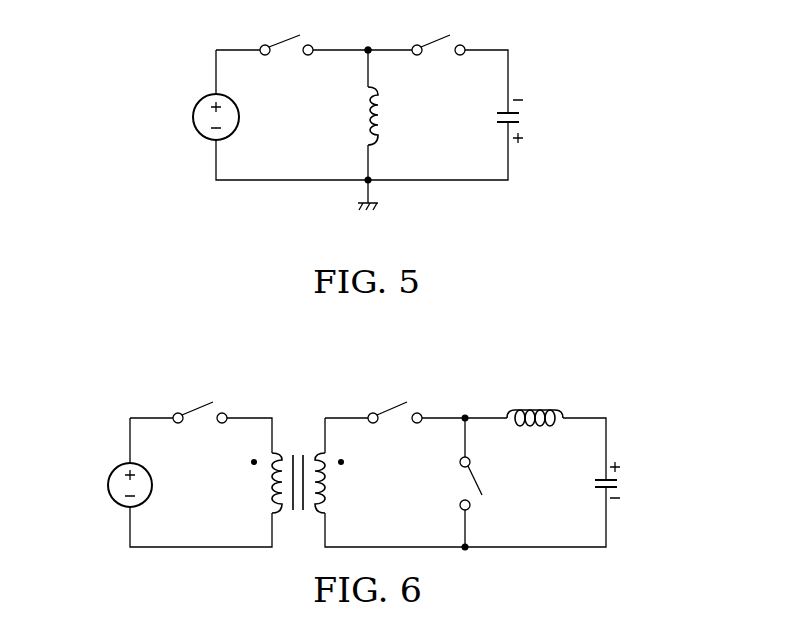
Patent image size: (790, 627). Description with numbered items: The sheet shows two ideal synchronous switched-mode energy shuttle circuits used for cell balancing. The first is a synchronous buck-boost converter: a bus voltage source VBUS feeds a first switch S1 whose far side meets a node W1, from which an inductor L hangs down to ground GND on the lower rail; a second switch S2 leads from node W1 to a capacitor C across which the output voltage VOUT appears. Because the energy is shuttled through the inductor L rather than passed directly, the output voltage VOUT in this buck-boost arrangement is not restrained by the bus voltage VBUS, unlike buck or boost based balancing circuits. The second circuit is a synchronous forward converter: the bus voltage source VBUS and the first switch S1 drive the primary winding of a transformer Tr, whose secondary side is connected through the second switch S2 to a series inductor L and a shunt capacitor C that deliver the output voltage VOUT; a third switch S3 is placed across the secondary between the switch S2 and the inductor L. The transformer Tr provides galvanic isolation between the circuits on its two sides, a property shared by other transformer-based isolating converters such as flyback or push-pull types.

In FIG. 5, the bus voltage VBUS is at (184, 117).
In FIG. 6, the bus voltage VBUS is at (97, 485).
In FIG. 5, the switch S1 is at (286, 61).
In FIG. 6, the switch S1 is at (200, 428).
In FIG. 5, the switch S2 is at (438, 61).
In FIG. 6, the switch S2 is at (395, 428).
In FIG. 6, the switch S3 is at (456, 483).
In FIG. 5, the inductor L is at (356, 116).
In FIG. 6, the inductor L is at (535, 404).
In FIG. 5, the capacitor C is at (496, 118).
In FIG. 6, the capacitor C is at (593, 486).
In FIG. 5, the output voltage VOUT is at (542, 121).
In FIG. 6, the output voltage VOUT is at (640, 483).
In FIG. 5, the switching node W1 is at (370, 34).
In FIG. 5, the ground GND is at (367, 220).
In FIG. 6, the transformer Tr is at (297, 464).